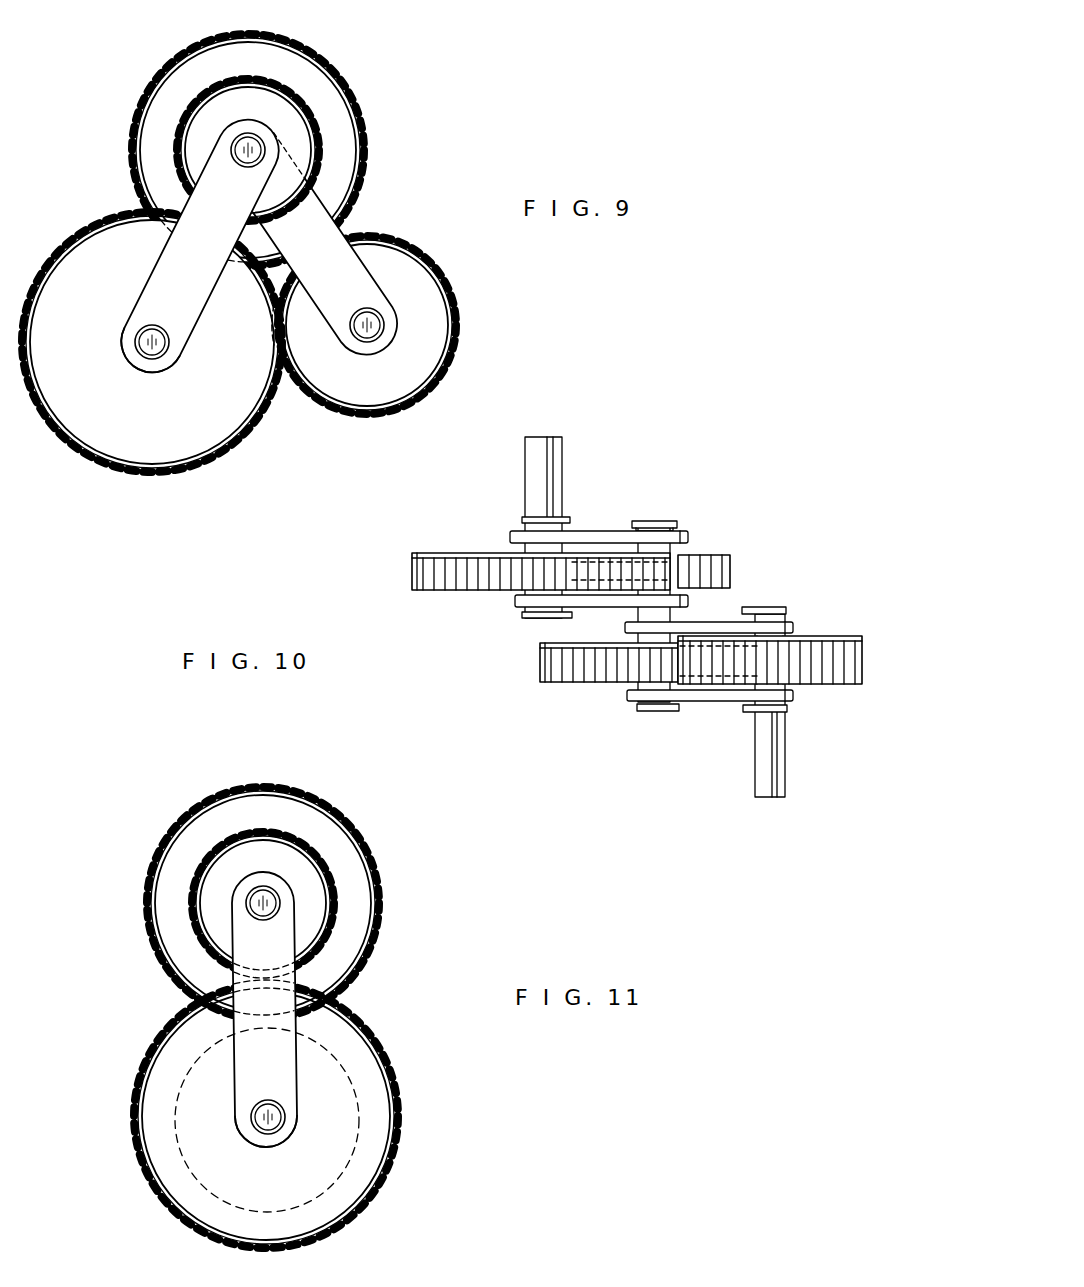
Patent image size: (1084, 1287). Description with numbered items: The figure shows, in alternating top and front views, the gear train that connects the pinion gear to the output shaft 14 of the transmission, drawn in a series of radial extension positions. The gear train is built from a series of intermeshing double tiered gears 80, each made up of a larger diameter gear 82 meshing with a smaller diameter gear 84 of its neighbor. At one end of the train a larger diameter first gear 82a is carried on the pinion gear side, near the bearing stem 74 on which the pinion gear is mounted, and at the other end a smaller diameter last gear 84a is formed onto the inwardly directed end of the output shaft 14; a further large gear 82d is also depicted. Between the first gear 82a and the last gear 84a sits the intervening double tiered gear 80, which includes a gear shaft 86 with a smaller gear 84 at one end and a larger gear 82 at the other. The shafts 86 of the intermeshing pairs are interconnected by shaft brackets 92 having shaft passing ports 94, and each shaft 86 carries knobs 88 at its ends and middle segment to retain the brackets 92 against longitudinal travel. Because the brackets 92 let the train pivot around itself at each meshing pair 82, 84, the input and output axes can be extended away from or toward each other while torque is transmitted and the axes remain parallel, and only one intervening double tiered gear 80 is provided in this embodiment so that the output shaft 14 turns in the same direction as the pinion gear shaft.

In FIG. 9, the double tiered gear 80 is at (440, 106).
In FIG. 11, the double tiered gear 80 is at (479, 913).
In FIG. 9, the larger diameter gear 82 is at (222, 56).
In FIG. 10, the larger diameter gear 82 is at (548, 674).
In FIG. 11, the larger diameter gear 82 is at (350, 870).
In FIG. 9, the smaller diameter gear 84 is at (300, 128).
In FIG. 11, the smaller diameter gear 84 is at (262, 832).
In FIG. 9, the first gear 82a is at (248, 434).
In FIG. 10, the first gear 82a is at (415, 570).
In FIG. 9, the last gear 84a is at (455, 340).
In FIG. 10, the last gear 84a is at (852, 640).
In FIG. 11, the gear 82d is at (390, 1158).
In FIG. 9, the gear shaft 86 is at (254, 134).
In FIG. 10, the gear shaft 86 is at (690, 612).
In FIG. 11, the gear shaft 86 is at (258, 897).
In FIG. 9, the shaft bracket 92 is at (222, 275).
In FIG. 10, the shaft bracket 92 is at (603, 532).
In FIG. 11, the shaft bracket 92 is at (258, 1068).
In FIG. 9, the shaft passing port 94 is at (230, 148).
In FIG. 10, the shaft passing port 94 is at (522, 520).
In FIG. 11, the shaft passing port 94 is at (300, 920).
In FIG. 10, the knob 88 is at (656, 521).
In FIG. 9, the bearing stem 74 is at (140, 346).
In FIG. 10, the bearing stem 74 is at (526, 441).
In FIG. 11, the bearing stem 74 is at (284, 1118).
In FIG. 9, the output shaft 14 is at (383, 330).
In FIG. 10, the output shaft 14 is at (780, 766).